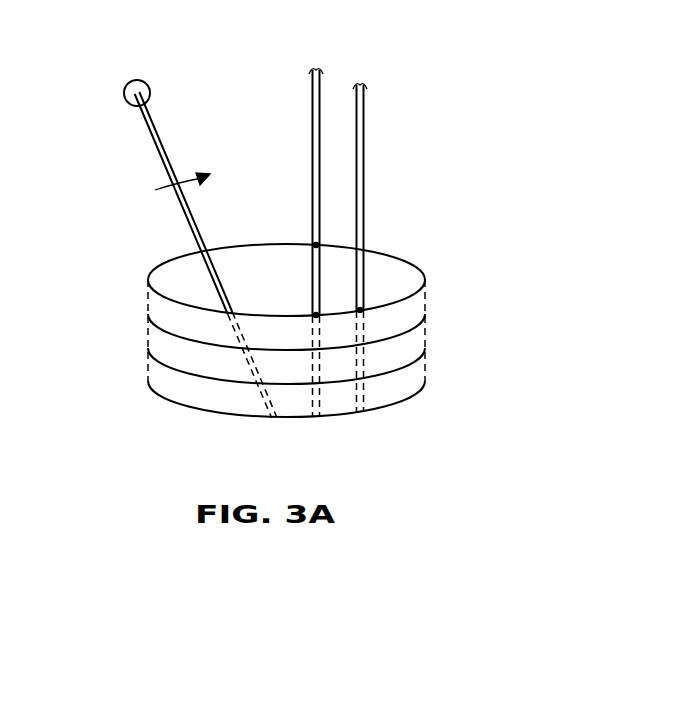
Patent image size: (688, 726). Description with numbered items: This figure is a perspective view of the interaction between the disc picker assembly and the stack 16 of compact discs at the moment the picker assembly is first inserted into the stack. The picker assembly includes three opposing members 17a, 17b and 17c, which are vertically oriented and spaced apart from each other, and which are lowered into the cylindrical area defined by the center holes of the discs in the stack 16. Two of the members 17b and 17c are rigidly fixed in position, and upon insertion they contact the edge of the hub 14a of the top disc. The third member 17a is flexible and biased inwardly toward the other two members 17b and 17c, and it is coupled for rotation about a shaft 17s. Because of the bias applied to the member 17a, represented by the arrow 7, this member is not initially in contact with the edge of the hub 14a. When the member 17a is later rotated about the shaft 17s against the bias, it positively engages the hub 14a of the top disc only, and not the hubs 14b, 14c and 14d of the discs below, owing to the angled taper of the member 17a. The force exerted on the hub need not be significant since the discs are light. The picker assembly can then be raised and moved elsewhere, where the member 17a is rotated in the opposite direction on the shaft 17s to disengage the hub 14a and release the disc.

The stack 16 is at (321, 359).
The hub 14a is at (172, 312).
The hub 14b is at (180, 338).
The hub 14c is at (180, 372).
The hub 14d is at (197, 410).
The member 17a is at (169, 224).
The member 17b is at (320, 85).
The member 17c is at (364, 153).
The shaft 17s is at (140, 80).
The arrow 7 is at (172, 190).